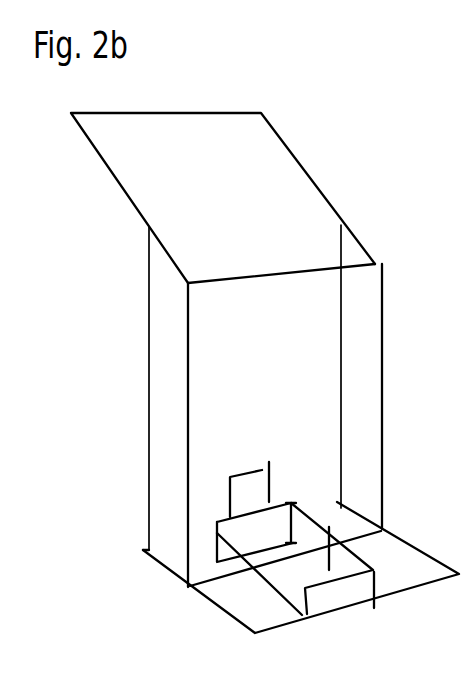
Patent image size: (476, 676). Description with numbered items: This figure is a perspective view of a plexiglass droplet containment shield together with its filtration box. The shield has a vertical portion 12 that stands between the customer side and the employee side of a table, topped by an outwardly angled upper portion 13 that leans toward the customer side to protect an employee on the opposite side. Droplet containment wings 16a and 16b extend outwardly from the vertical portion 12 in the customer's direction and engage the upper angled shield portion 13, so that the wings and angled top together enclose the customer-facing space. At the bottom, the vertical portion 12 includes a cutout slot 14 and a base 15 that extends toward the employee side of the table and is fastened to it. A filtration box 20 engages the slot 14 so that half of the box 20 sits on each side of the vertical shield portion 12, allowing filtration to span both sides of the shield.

The vertical portion 12 is at (258, 419).
The outwardly angled upper portion 13 is at (287, 195).
The cutout slot 14 is at (248, 492).
The base 15 is at (394, 562).
The droplet containment wing 16a is at (165, 388).
The droplet containment wing 16b is at (385, 341).
The filtration box 20 is at (329, 527).